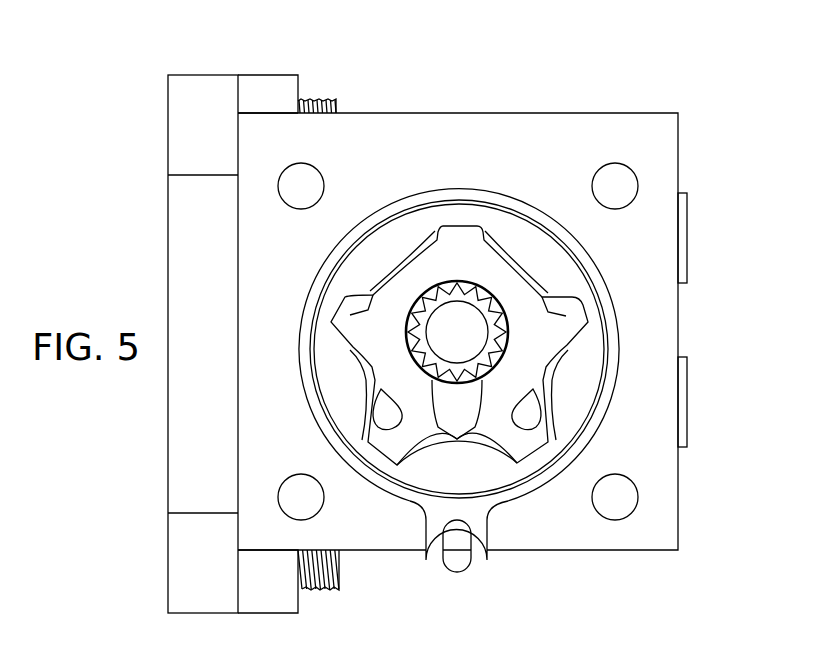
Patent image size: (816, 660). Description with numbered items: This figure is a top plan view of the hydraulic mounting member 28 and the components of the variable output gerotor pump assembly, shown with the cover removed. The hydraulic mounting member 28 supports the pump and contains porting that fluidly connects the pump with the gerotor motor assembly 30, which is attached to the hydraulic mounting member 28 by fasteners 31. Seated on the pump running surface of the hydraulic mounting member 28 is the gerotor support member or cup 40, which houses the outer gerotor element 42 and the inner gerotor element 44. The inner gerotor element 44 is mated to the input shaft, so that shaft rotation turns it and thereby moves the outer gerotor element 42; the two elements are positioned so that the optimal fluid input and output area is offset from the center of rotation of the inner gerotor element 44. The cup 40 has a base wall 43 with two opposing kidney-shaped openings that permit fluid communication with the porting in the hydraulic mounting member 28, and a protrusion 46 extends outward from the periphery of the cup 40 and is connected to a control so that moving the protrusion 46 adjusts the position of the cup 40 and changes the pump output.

The hydraulic mounting member 28 is at (678, 152).
The gerotor motor assembly 30 is at (143, 559).
The fasteners 31 is at (323, 99).
The cup 40 is at (390, 188).
The outer gerotor element 42 is at (372, 269).
The base wall 43 is at (512, 440).
The inner gerotor element 44 is at (521, 343).
The protrusion 46 is at (478, 578).